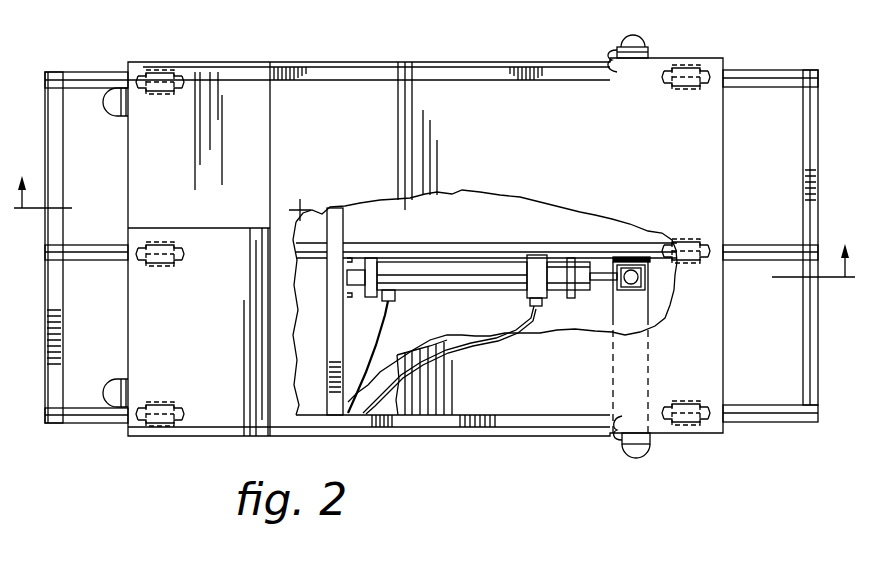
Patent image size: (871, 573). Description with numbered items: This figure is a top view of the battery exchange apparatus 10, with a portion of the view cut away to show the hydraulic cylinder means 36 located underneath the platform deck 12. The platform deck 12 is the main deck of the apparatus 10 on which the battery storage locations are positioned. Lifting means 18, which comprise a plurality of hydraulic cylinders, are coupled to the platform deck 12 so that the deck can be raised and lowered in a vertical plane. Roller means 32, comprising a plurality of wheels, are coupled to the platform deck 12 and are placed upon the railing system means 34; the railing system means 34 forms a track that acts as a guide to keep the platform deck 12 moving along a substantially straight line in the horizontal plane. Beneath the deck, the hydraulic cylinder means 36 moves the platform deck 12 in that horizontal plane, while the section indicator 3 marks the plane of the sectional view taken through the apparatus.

The battery exchange apparatus 10 is at (496, 451).
The platform deck 12 is at (330, 95).
The lifting means 18 is at (110, 92).
The roller means 32 is at (163, 80).
The railing system means 34 is at (819, 97).
The hydraulic cylinder means 36 is at (467, 278).
The section line 3- 3 is at (434, 212).